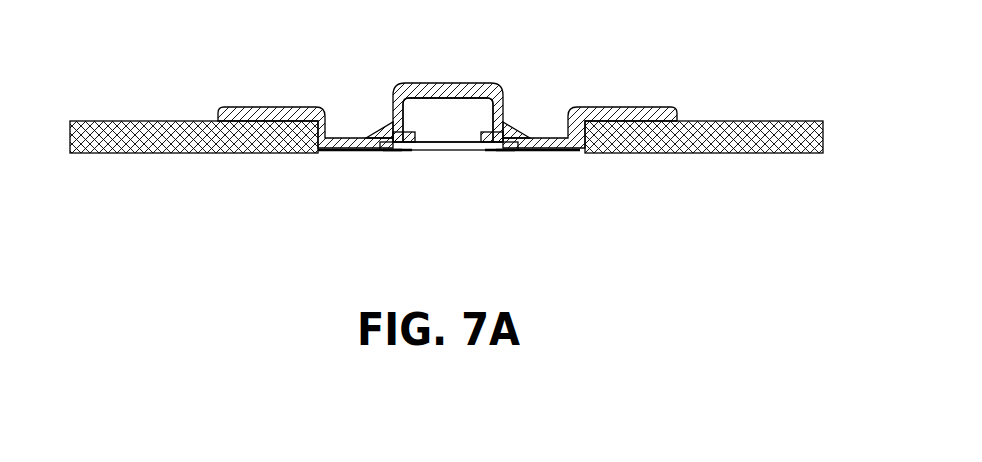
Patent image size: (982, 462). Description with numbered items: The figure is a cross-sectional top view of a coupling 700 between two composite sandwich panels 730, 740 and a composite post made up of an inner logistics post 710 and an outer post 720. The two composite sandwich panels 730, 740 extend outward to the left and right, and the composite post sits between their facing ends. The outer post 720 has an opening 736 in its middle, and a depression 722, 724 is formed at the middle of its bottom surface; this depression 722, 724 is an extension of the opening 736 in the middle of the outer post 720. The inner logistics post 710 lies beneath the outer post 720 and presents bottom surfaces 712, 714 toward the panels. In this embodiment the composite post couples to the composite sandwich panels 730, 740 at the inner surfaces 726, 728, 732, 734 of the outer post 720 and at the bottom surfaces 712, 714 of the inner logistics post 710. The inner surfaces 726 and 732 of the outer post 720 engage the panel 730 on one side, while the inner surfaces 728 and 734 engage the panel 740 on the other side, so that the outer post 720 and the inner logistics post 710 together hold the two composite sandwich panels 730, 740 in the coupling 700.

The coupling 700 is at (349, 35).
The inner logistics post 710 is at (420, 151).
The bottom surface of inner logistics post 712 is at (508, 153).
The bottom surface of inner logistics post 714 is at (391, 151).
The outer post 720 is at (489, 86).
The depression 722 is at (502, 138).
The depression 724 is at (390, 132).
The inner surface of outer post 726 is at (243, 119).
The inner surface of outer post 728 is at (638, 121).
The composite sandwich panel 730 is at (107, 152).
The inner surface of outer post 732 is at (334, 152).
The inner surface of outer post 734 is at (561, 153).
The opening 736 is at (432, 115).
The composite sandwich panel 740 is at (795, 153).